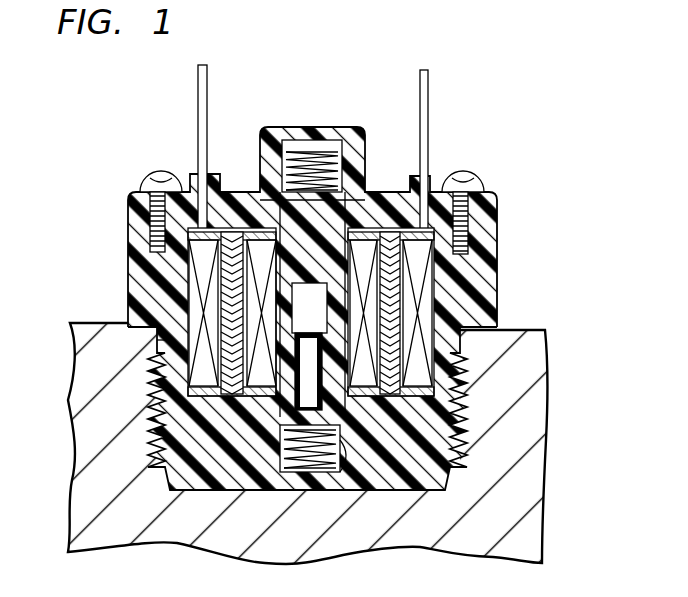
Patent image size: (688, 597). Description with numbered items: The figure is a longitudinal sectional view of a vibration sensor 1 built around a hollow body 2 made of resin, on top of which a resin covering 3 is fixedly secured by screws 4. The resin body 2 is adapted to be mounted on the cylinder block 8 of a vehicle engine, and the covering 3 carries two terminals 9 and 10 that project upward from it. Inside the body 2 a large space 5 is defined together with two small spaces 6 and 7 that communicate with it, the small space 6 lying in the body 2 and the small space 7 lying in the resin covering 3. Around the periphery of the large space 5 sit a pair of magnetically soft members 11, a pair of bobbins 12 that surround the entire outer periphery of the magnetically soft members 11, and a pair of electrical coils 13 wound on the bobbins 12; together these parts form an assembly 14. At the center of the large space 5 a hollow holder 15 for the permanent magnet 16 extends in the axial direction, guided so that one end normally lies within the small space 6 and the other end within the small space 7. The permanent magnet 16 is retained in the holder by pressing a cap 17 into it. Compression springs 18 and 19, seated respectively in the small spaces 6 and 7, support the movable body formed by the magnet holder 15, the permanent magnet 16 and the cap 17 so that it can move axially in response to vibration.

The vibration sensor 1 is at (320, 314).
The hollow body 2 is at (478, 300).
The resin covering 3 is at (486, 198).
The screws 4 is at (464, 176).
The large space 5 is at (280, 290).
The small space 6 is at (350, 460).
The small space 7 is at (330, 152).
The cylinder block 8 is at (530, 406).
The terminal 9 is at (428, 78).
The terminal 10 is at (207, 74).
The magnetically soft members 11 is at (261, 257).
The bobbins 12 is at (236, 190).
The electrical coils 13 is at (355, 270).
The assembly 14 is at (160, 340).
The hollow holder 15 is at (340, 470).
The permanent magnet 16 is at (186, 352).
The cap 17 is at (263, 198).
The compression spring 18 is at (298, 470).
The compression spring 19 is at (320, 150).